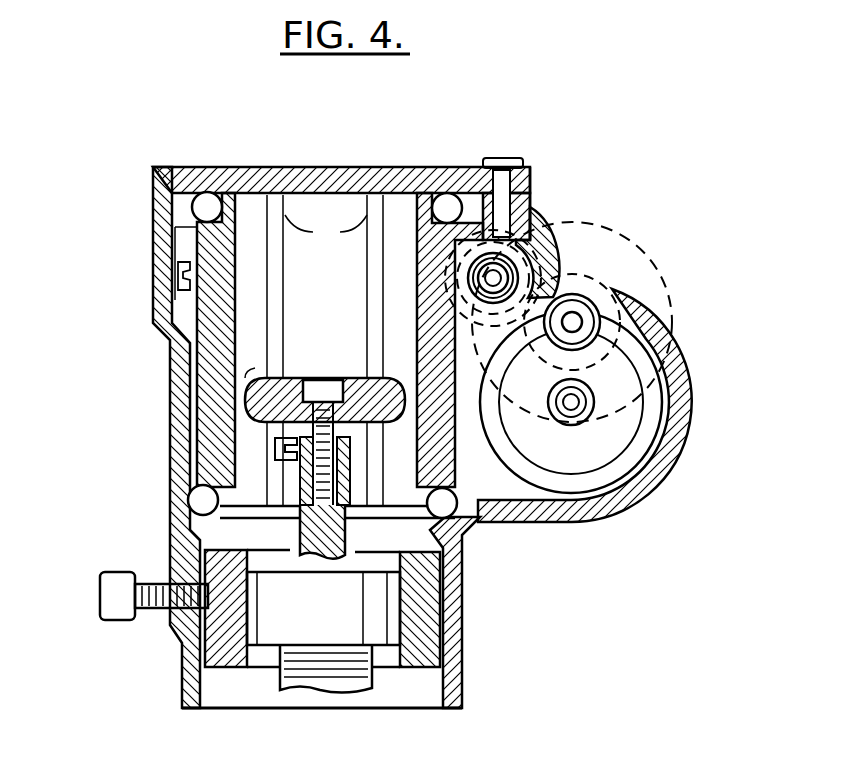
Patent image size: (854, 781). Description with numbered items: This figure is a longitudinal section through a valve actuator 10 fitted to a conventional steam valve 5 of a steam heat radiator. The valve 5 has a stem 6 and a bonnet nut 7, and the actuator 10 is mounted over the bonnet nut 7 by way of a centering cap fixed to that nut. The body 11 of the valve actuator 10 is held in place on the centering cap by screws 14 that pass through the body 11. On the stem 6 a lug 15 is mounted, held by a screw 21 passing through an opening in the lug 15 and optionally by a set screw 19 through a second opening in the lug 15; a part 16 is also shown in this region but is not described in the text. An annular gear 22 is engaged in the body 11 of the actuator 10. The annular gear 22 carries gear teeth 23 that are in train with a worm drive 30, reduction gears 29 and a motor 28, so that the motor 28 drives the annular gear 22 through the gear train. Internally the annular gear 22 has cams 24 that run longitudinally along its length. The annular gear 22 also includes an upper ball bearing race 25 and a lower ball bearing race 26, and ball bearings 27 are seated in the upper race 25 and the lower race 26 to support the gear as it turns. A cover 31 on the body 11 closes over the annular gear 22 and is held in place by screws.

The steam valve 5 is at (288, 678).
The stem 6 is at (325, 532).
The bonnet nut 7 is at (370, 628).
The valve actuator 10 is at (470, 605).
The body 11 is at (470, 668).
The screws 14 is at (118, 590).
The lug 15 is at (247, 378).
The hub flange 16 is at (258, 400).
The set screw 19 is at (277, 460).
The screw 21 is at (322, 385).
The annular gear 22 is at (340, 295).
The gear teeth 23 is at (196, 275).
The cams 24 is at (325, 350).
The upper ball bearing race 25 is at (437, 190).
The lower ball bearing race 26 is at (218, 533).
The ball bearings 27 is at (207, 205).
The motor 28 is at (608, 437).
The reduction gears 29 is at (652, 252).
The worm drive 30 is at (512, 262).
The cover 31 is at (328, 188).